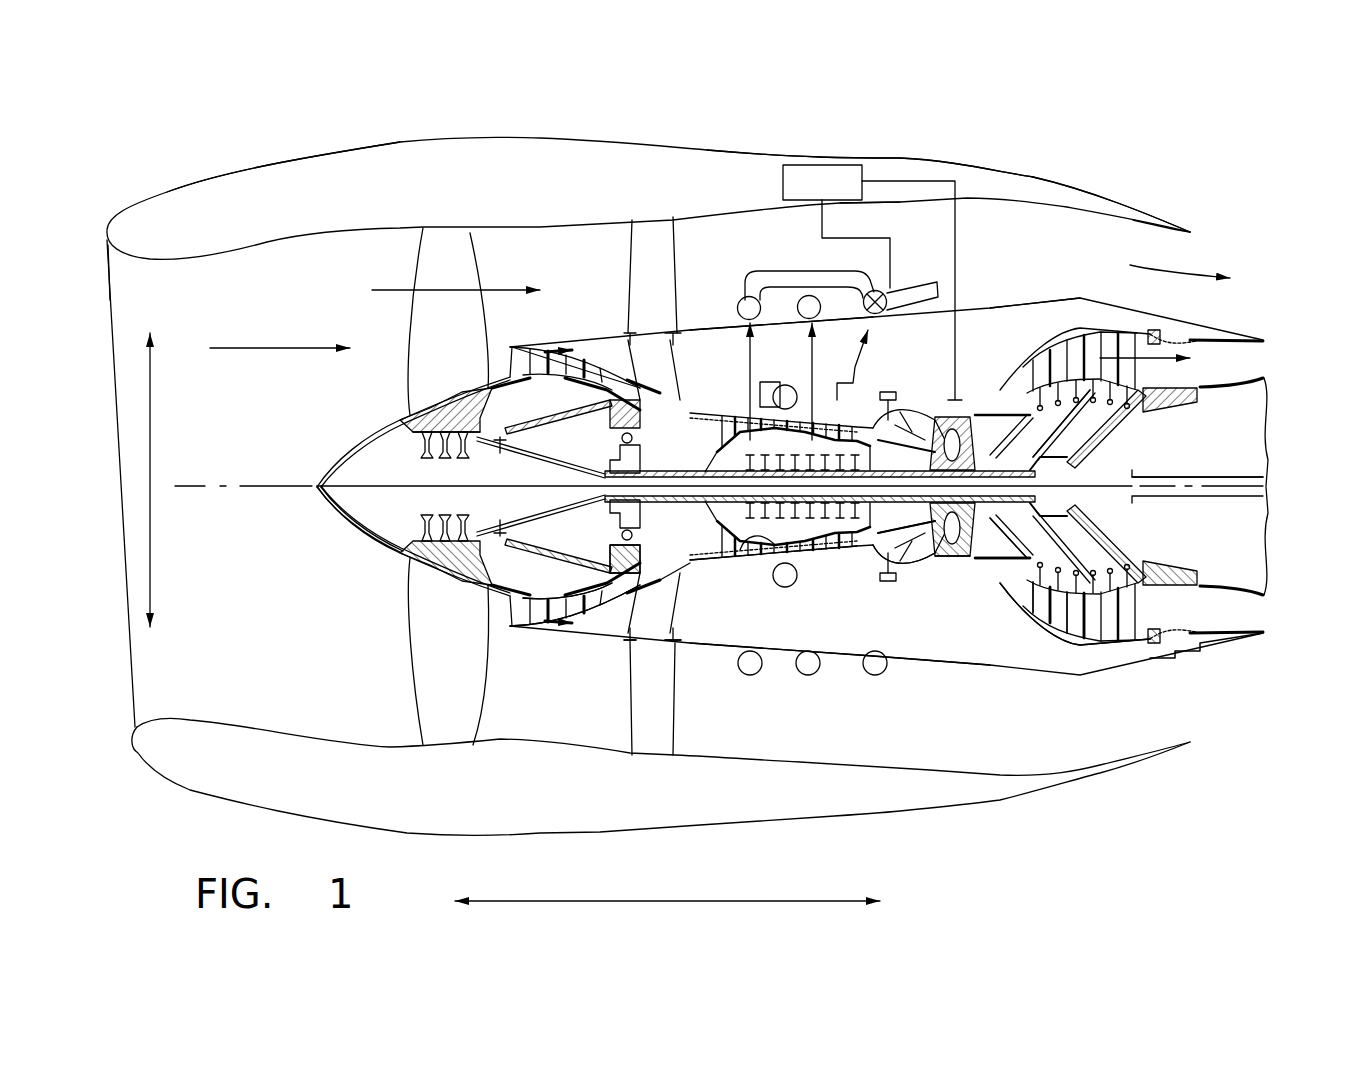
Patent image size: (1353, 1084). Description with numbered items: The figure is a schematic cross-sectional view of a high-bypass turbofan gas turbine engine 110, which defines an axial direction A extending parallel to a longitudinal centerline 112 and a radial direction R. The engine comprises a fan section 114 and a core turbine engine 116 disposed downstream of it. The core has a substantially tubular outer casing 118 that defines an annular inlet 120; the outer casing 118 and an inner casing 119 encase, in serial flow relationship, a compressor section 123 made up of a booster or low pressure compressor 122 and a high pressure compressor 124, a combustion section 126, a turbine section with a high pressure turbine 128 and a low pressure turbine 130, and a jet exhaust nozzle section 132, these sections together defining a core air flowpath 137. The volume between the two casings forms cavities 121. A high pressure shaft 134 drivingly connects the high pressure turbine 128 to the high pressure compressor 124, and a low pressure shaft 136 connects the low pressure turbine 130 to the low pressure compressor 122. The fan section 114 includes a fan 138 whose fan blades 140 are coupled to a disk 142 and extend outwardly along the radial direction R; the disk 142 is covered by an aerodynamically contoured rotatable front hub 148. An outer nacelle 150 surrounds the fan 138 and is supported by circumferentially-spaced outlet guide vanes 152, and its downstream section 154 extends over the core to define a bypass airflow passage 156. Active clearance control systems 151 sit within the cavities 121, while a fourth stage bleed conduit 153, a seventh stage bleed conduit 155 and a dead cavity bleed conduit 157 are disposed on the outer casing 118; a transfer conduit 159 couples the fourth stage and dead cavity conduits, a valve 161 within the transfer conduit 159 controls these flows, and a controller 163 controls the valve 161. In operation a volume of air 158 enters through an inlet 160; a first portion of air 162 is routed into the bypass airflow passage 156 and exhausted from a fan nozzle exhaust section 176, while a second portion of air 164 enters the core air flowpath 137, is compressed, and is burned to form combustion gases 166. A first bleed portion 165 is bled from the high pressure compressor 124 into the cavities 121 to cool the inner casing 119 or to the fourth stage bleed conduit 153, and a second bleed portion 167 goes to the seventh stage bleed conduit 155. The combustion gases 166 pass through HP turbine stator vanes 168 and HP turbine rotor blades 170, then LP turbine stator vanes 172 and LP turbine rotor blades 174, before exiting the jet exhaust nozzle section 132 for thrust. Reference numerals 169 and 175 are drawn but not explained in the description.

The gas turbine engine 110 is at (1172, 132).
The longitudinal centerline 112 is at (1190, 488).
The fan section 114 is at (297, 270).
The core turbine engine 116 is at (890, 598).
The outer casing 118 is at (928, 662).
The inner casing 119 is at (680, 570).
The annular inlet 120 is at (505, 617).
The cavities 121 is at (855, 361).
The low pressure compressor 122 is at (600, 635).
The compressor section 123 is at (618, 648).
The high pressure compressor 124 is at (738, 570).
The combustion section 126 is at (920, 590).
The high pressure turbine 128 is at (1020, 548).
The low pressure turbine 130 is at (1118, 640).
The jet exhaust nozzle section 132 is at (1213, 622).
The high pressure shaft 134 is at (927, 405).
The low pressure shaft 136 is at (1095, 425).
The core air flowpath 137 is at (683, 643).
The fan 138 is at (358, 555).
The fan blades 140 is at (412, 684).
The disk 142 is at (425, 440).
The rotatable front hub 148 is at (345, 512).
The outer nacelle 150 is at (425, 835).
The active clearance control system 151 is at (760, 390).
The outlet guide vanes 152 is at (678, 260).
The fourth stage bleed conduit 153 is at (744, 311).
The downstream section of nacelle 154 is at (880, 160).
The seventh stage bleed conduit 155 is at (807, 708).
The bypass airflow passage 156 is at (932, 238).
The dead cavity bleed conduit 157 is at (890, 292).
The volume of air 158 is at (268, 348).
The transfer conduit 159 is at (778, 272).
The inlet 160 is at (123, 728).
The valve 161 is at (887, 285).
The first portion of air 162 is at (448, 290).
The controller 163 is at (838, 194).
The second portion of air 164 is at (530, 360).
The first bleed portion of air 165 is at (750, 365).
The combustion gases 166 is at (1163, 350).
The second bleed portion of air 167 is at (812, 362).
The HP turbine stator vanes 168 is at (930, 572).
The bleed air flow 169 is at (858, 366).
The HP turbine rotor blades 170 is at (1055, 515).
The LP turbine stator vanes 172 is at (1030, 602).
The LP turbine rotor blades 174 is at (1030, 608).
The sensor wire 175 is at (740, 550).
The fan nozzle exhaust section 176 is at (1177, 245).
The radial direction R is at (150, 517).
The axial direction A is at (670, 900).